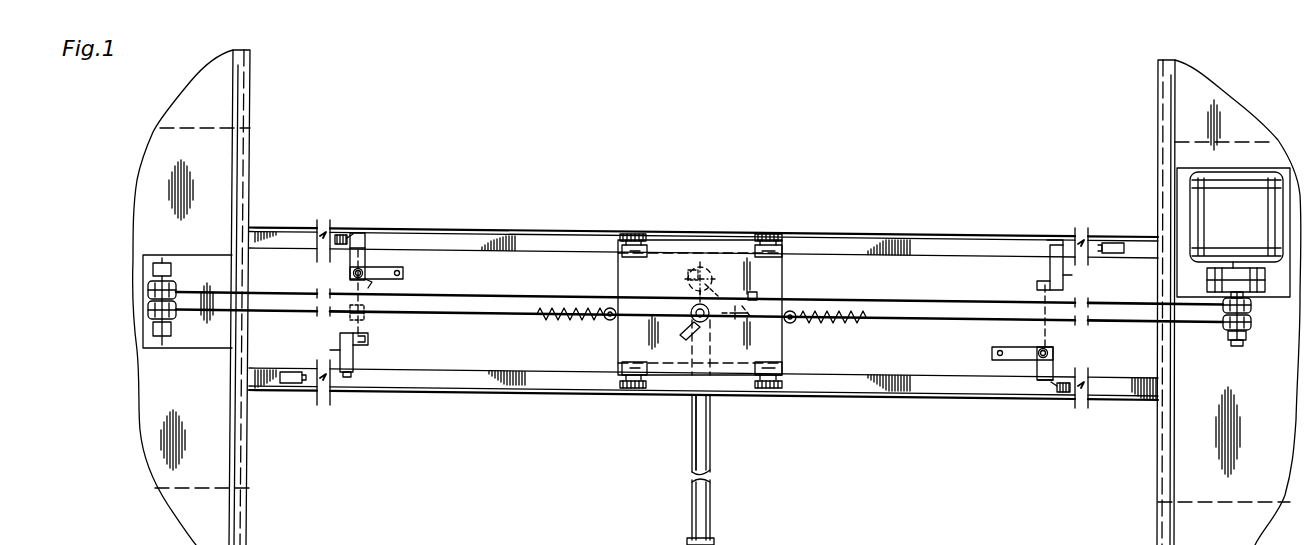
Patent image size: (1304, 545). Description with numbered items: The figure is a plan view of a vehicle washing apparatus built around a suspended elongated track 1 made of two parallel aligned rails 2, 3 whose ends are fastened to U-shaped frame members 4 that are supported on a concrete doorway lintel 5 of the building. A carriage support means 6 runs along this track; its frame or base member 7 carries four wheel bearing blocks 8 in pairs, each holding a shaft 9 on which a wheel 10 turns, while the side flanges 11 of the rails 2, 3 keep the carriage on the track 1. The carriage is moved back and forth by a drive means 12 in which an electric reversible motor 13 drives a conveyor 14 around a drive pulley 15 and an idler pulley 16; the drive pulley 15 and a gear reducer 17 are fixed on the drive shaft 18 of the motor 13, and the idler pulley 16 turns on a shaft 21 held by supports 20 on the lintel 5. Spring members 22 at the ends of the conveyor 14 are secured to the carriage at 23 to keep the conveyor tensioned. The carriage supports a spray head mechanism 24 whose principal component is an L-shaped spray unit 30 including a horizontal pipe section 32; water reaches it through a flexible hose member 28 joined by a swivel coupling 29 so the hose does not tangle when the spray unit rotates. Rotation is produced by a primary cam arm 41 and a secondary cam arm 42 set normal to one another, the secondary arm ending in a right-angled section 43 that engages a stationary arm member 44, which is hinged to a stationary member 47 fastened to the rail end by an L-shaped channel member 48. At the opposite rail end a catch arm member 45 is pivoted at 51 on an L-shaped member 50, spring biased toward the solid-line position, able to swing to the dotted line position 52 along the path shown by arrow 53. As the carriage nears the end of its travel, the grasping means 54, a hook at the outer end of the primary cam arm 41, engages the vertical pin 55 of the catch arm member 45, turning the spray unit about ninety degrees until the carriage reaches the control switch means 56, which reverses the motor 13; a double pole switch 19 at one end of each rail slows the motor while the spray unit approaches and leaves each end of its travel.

The elongated track 1 is at (445, 392).
The rail 2 is at (545, 210).
The rail 3 is at (498, 393).
The U-shaped frame member 4 is at (247, 93).
The concrete doorway lintel 5 is at (182, 100).
The carriage support means 6 is at (690, 240).
The frame or base member 7 is at (620, 279).
The wheel bearing block 8 is at (646, 253).
The shaft 9 is at (622, 258).
The wheel 10 is at (640, 215).
The side flange 11 is at (470, 207).
The drive means 12 is at (1292, 330).
The electric reversible motor 13 is at (1242, 188).
The conveyor 14 is at (923, 300).
The drive pulley 15 is at (1226, 337).
The idler pulley 16 is at (150, 312).
The gear reducer 17 is at (1228, 280).
The drive shaft 18 is at (1232, 268).
The double pole switch 19 is at (342, 235).
The support 20 is at (183, 256).
The shaft 21 is at (168, 262).
The spring member 22 is at (548, 320).
The spring attachment point 23 is at (607, 320).
The spray head mechanism 24 is at (692, 302).
The flexible hose member 28 is at (690, 313).
The swivel coupling 29 is at (706, 325).
The L-shaped spray unit 30 is at (693, 440).
The horizontal pipe section 32 is at (708, 440).
The primary cam arm 41 is at (713, 278).
The secondary cam arm 42 is at (723, 286).
The right-angled section 43 is at (752, 313).
The stationary arm member 44 is at (372, 352).
The catch arm member 45 is at (372, 262).
The stationary member 47 is at (368, 337).
The L-shaped channel member 48 is at (340, 352).
The L-shaped member 50 is at (352, 255).
The pivot 51 is at (357, 275).
The dotted line position 52 is at (346, 312).
The arrow 53 is at (388, 282).
The grasping means 54 is at (694, 266).
The vertical pin 55 is at (403, 273).
The control switch means 56 is at (292, 384).